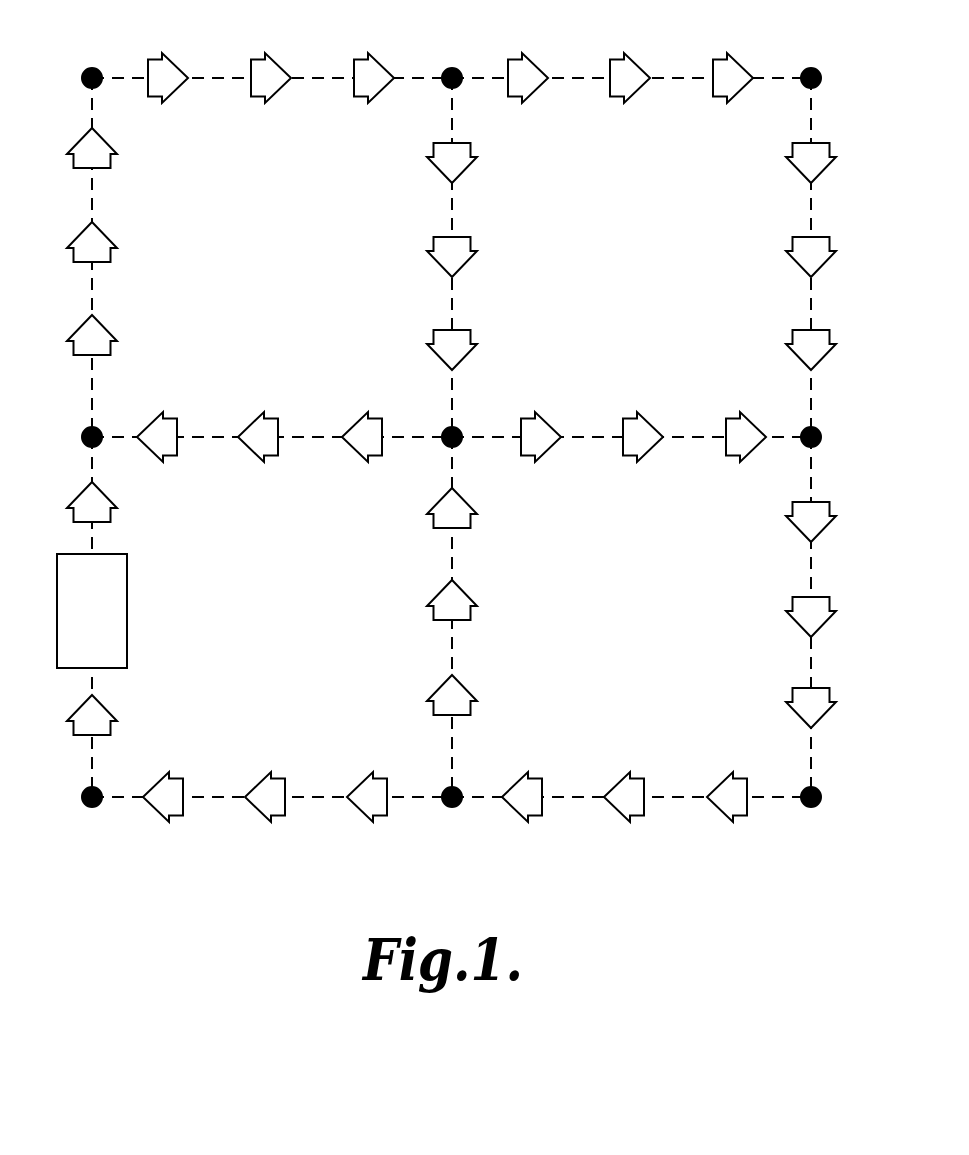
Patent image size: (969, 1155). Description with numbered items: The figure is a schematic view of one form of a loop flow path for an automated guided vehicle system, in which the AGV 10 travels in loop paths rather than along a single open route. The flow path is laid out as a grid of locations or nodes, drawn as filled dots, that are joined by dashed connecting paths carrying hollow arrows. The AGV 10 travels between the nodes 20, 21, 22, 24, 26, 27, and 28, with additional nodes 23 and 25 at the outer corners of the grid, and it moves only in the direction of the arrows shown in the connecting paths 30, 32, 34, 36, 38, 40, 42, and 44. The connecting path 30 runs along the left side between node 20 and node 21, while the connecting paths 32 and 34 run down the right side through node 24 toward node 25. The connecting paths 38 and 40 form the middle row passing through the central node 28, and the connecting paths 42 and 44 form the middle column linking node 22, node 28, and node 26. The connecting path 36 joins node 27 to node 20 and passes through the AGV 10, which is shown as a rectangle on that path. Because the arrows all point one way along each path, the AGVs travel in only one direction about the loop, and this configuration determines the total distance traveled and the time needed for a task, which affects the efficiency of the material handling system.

The AGV 10 is at (106, 621).
The node 20 is at (84, 430).
The node 21 is at (86, 68).
The node 22 is at (445, 70).
The junction node 23 is at (818, 68).
The node 24 is at (820, 432).
The junction node 25 is at (820, 808).
The node 26 is at (448, 808).
The node 27 is at (86, 808).
The node 28 is at (445, 430).
The connecting path 30 is at (92, 208).
The connecting path 32 is at (811, 208).
The connecting path 34 is at (811, 660).
The connecting path 36 is at (78, 617).
The connecting path 38 is at (207, 437).
The connecting path 40 is at (695, 437).
The connecting path 42 is at (452, 214).
The connecting path 44 is at (452, 550).